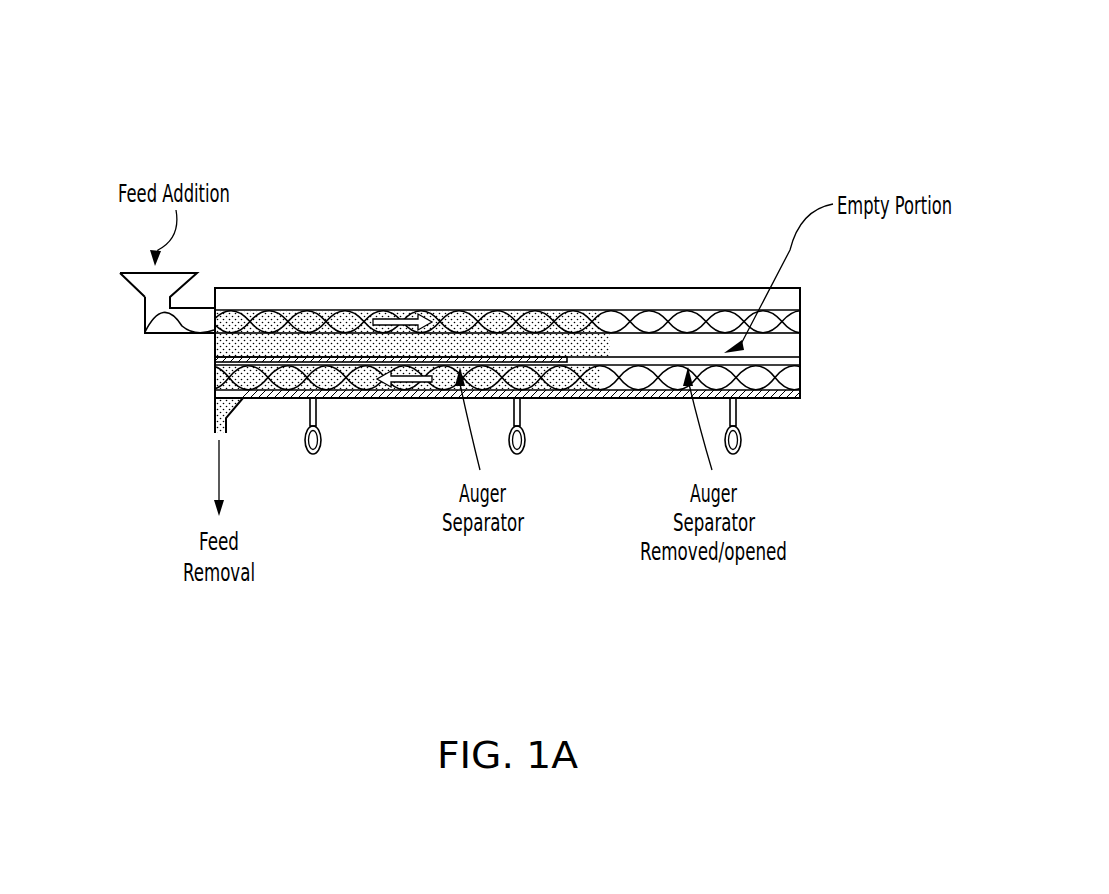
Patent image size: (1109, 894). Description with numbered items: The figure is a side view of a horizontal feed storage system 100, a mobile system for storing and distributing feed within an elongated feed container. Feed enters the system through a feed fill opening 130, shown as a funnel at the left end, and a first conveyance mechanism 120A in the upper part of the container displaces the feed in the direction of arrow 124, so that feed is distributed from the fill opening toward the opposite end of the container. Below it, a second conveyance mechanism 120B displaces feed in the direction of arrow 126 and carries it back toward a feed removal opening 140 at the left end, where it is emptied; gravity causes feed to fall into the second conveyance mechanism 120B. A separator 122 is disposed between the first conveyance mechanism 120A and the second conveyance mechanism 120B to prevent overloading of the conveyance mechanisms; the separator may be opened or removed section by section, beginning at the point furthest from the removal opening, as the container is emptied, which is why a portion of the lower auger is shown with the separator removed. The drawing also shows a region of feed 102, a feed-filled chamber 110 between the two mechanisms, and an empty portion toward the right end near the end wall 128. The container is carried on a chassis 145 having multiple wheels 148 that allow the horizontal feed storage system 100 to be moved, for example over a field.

The horizontal feed storage system 100 is at (800, 91).
The feed 102 is at (584, 341).
The feed chamber 110 is at (203, 349).
The first conveyance mechanism 120A is at (785, 320).
The second conveyance mechanism 120B is at (785, 375).
The separator 122 is at (480, 357).
The arrow 124 is at (404, 316).
The arrow 126 is at (405, 384).
The end wall 128 is at (814, 350).
The feed fill opening 130 is at (126, 278).
The feed removal opening 140 is at (227, 434).
The chassis 145 is at (320, 400).
The wheels 148 is at (321, 442).